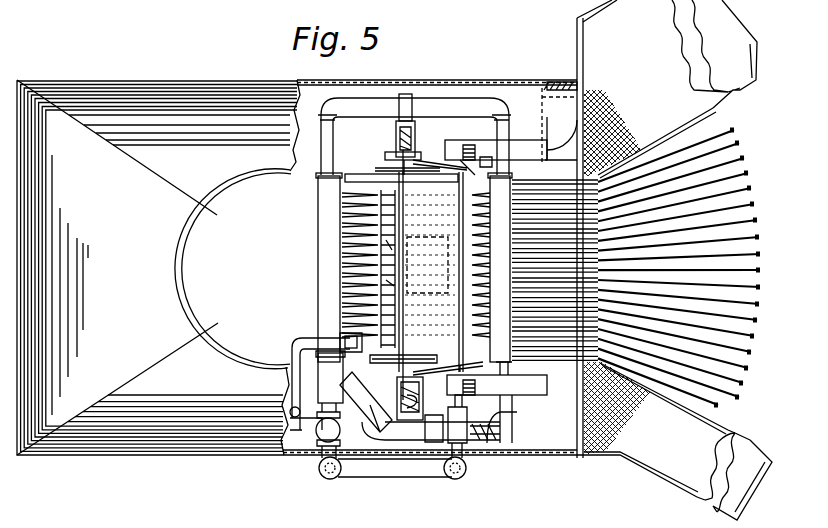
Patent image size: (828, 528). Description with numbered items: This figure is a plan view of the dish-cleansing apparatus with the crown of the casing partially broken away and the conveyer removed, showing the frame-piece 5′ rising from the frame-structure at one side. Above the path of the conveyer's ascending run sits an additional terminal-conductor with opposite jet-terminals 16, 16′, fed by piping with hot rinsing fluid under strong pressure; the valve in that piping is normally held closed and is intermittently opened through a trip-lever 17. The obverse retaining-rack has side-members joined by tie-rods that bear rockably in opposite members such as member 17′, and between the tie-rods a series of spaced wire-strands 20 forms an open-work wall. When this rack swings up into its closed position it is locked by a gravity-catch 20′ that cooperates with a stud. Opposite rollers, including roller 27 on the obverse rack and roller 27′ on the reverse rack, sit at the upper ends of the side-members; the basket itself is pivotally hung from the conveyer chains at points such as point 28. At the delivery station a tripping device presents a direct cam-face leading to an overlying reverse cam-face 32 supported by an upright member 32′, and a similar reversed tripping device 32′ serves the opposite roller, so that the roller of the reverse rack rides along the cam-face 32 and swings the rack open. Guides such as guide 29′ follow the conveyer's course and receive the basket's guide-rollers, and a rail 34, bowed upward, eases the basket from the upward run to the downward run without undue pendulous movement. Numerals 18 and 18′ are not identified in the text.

The rail 34 is at (92, 245).
The jet-terminal 16 is at (322, 222).
The jet-terminal 16′ is at (512, 182).
The trip-lever 17 is at (300, 342).
The member 17′ is at (412, 362).
The heat exchanger fins 18 is at (418, 186).
The fins 18′ is at (342, 300).
The wire-strand 20 is at (345, 262).
The gravity-catch 20′ is at (330, 370).
The roller 27 is at (340, 206).
The roller 27′ is at (508, 366).
The point of pivotal attachment 28 is at (413, 126).
The guide 29′ is at (392, 160).
The reverse cam-face 32 is at (518, 146).
The upright member 32′ is at (497, 385).
The frame-piece 5′ is at (556, 450).